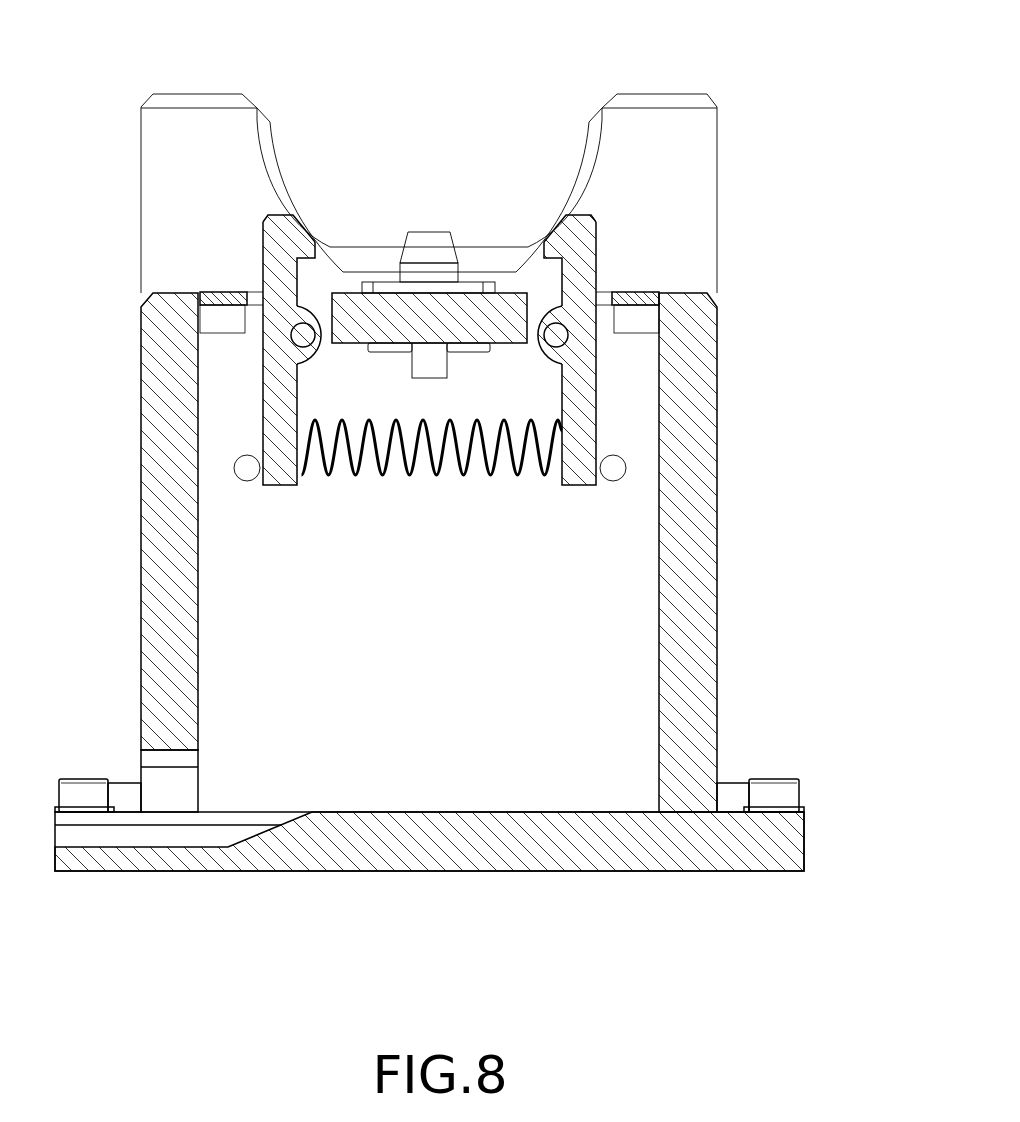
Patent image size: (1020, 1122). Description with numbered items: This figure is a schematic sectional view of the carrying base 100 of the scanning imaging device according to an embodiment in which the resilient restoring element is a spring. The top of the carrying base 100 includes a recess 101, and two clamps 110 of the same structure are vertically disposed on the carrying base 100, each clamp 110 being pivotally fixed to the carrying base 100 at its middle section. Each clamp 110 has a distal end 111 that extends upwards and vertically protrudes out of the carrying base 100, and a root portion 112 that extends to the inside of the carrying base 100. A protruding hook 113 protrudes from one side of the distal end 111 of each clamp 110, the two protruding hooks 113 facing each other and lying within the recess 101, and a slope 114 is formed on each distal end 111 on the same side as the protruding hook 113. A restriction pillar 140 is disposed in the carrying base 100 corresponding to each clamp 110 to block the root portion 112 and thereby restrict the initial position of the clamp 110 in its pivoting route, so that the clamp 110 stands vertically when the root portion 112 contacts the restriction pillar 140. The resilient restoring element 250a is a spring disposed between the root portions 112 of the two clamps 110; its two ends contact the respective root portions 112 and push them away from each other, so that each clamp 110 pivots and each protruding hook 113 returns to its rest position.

The carrying base 100 is at (730, 436).
The recess 101 is at (525, 100).
The clamp 110 is at (430, 360).
The distal end 111 is at (263, 220).
The root portion 112 is at (278, 486).
The protruding hook 113 is at (312, 244).
The slope 114 is at (261, 228).
The restriction pillar 140 is at (245, 467).
The resilient restoring element 250a is at (417, 458).